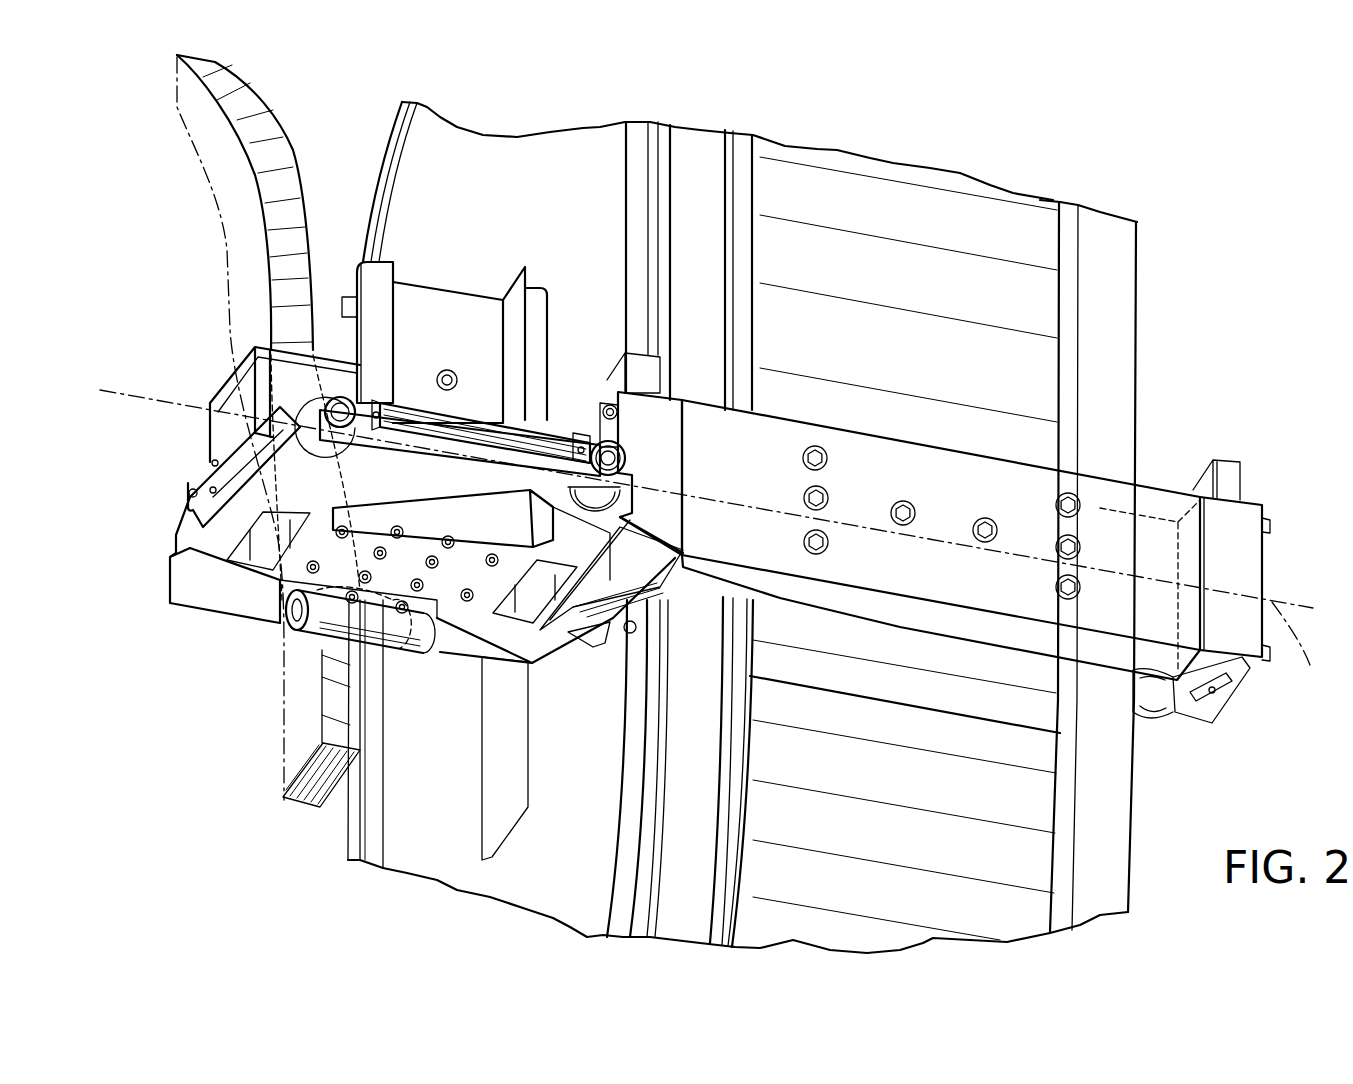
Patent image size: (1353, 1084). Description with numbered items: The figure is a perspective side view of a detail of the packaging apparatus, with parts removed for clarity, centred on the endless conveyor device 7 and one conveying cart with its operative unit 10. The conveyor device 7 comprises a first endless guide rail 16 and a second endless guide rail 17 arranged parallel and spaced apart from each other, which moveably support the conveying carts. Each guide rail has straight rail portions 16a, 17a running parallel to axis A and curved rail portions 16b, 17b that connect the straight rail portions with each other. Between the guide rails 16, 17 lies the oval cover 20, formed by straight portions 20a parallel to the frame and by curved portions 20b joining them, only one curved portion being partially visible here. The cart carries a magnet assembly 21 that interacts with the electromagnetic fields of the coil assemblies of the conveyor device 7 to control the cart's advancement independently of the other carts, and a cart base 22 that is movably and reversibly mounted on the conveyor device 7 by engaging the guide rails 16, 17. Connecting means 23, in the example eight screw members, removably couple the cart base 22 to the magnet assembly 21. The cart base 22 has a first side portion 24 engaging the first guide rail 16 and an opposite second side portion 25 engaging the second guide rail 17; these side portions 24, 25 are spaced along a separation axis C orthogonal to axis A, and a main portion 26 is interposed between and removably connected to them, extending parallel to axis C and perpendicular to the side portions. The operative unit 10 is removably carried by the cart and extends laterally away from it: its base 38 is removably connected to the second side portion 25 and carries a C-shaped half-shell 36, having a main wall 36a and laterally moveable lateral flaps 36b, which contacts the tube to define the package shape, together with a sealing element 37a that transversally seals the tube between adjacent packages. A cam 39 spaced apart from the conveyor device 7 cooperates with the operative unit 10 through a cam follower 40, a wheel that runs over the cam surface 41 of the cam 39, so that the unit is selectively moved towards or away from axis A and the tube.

The endless conveyor device 7 is at (1050, 123).
The operative unit 10 is at (160, 607).
The first endless guide rail 16 is at (1115, 277).
The straight rail portion 16a is at (1093, 355).
The curved rail portion 16b is at (1112, 852).
The second endless guide rail 17 is at (673, 177).
The straight rail portion 17a is at (693, 222).
The curved rail portion 17b is at (673, 862).
The cover 20 is at (913, 230).
The straight portion 20a is at (1000, 305).
The curved portion 20b is at (763, 907).
The magnet assembly 21 is at (903, 640).
The cart base 22 is at (724, 557).
The connecting means 23 is at (902, 558).
The first side portion 24 is at (1237, 528).
The second side portion 25 is at (663, 430).
The main portion 26 is at (907, 467).
The half-shell 36 is at (472, 299).
The main wall 36a is at (463, 310).
The lateral flap 36b is at (370, 292).
The sealing element 37a is at (593, 480).
The base 38 is at (440, 607).
The cam 39 is at (228, 156).
The cam follower 40 is at (347, 645).
The cam surface 41 is at (270, 157).
The separation axis C is at (1301, 648).